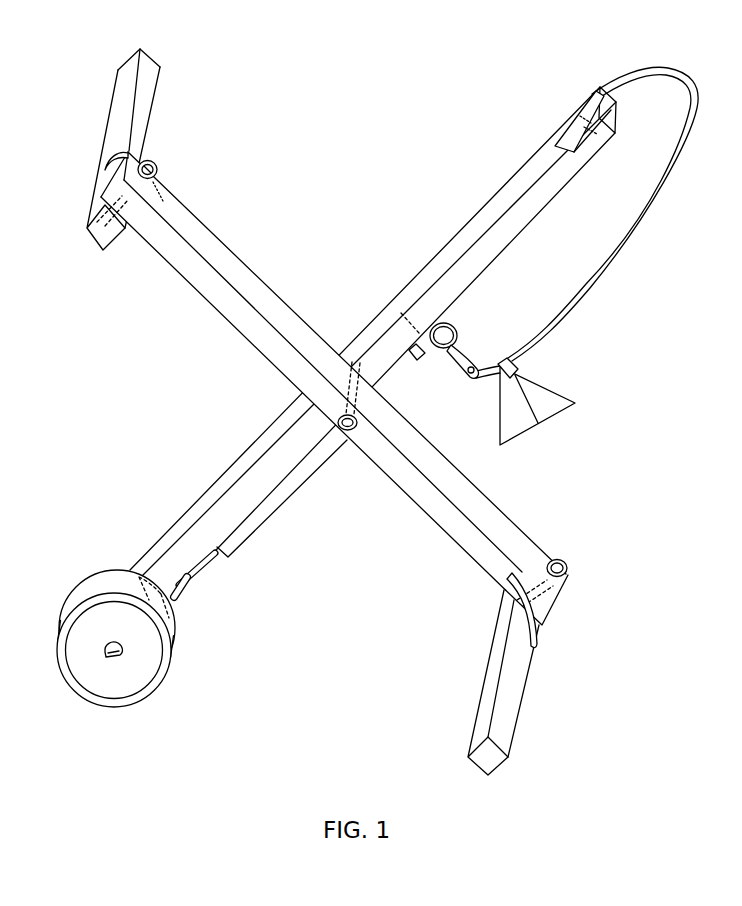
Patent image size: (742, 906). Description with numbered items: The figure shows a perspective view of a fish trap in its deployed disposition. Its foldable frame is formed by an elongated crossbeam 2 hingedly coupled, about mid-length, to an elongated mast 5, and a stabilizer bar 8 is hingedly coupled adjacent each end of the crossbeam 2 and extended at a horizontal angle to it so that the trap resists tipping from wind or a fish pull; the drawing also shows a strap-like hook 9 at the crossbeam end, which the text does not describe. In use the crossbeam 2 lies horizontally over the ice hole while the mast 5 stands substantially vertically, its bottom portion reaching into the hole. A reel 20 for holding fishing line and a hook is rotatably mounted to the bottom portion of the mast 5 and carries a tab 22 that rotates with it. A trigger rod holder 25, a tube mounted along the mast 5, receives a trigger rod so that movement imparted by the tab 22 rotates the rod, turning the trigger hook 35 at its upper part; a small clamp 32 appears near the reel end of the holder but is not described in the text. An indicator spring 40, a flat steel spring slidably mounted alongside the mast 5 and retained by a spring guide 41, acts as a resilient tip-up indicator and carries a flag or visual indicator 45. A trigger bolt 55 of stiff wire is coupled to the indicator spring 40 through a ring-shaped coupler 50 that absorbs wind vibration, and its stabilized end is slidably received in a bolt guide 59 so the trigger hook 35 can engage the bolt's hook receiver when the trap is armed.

The crossbeam 2 is at (181, 256).
The mast 5 is at (526, 197).
The stabilizer bar 8 is at (150, 64).
The strap hook 9 is at (539, 641).
The reel 20 is at (133, 683).
The tab 22 is at (131, 566).
The trigger rod holder 25 is at (283, 497).
The clamp 32 is at (176, 604).
The trigger hook 35 is at (213, 562).
The indicator spring 40 is at (590, 293).
The spring guide 41 is at (580, 110).
The visual indicator 45 is at (552, 417).
The coupler 50 is at (465, 380).
The trigger bolt 55 is at (470, 356).
The bolt guide 59 is at (428, 331).